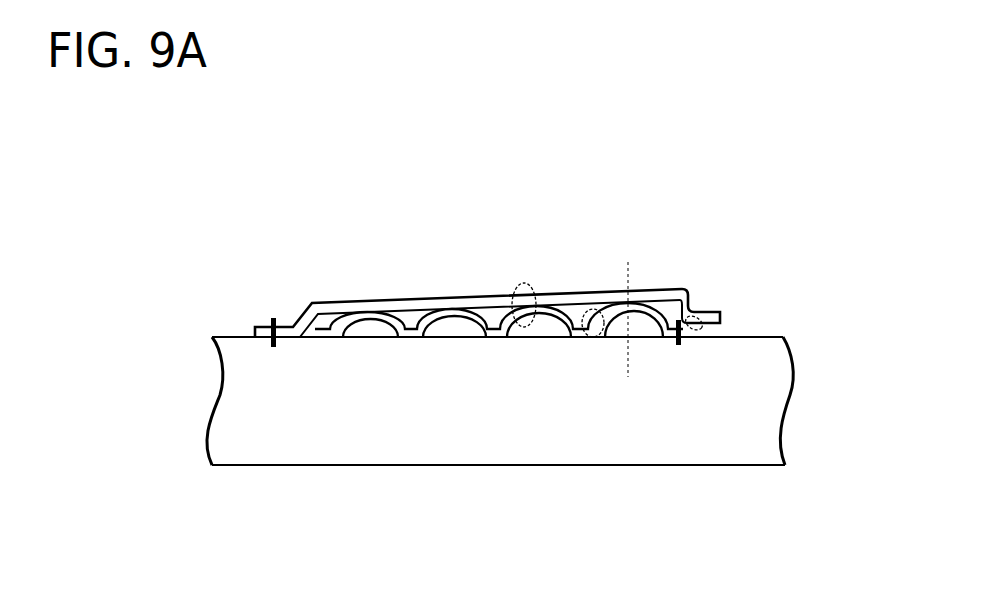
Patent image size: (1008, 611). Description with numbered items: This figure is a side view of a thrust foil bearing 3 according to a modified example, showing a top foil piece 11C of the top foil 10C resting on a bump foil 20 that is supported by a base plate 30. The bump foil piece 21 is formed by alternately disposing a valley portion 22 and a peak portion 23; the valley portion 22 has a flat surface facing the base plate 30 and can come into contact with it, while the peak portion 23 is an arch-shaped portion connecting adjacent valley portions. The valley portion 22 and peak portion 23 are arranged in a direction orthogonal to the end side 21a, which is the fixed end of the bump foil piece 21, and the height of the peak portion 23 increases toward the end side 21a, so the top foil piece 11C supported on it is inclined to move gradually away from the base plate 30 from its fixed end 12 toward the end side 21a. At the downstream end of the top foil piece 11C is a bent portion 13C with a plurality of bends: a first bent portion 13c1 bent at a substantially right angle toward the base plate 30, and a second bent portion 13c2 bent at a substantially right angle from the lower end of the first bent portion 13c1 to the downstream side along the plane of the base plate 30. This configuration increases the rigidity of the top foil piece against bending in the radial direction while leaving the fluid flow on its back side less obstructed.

The thrust foil bearing 3 is at (236, 256).
The top foil 10C is at (482, 291).
The top foil piece 11C is at (423, 302).
The fixed end 12 is at (261, 327).
The bent portion 13C is at (812, 213).
The first bent portion 13c1 is at (694, 306).
The second bent portion 13c2 is at (716, 310).
The bump foil 20 is at (359, 332).
The bump foil piece 21 is at (377, 319).
The end side 21a is at (700, 327).
The valley portion 22 is at (610, 290).
The peak portion 23 is at (513, 327).
The base plate 30 is at (760, 397).